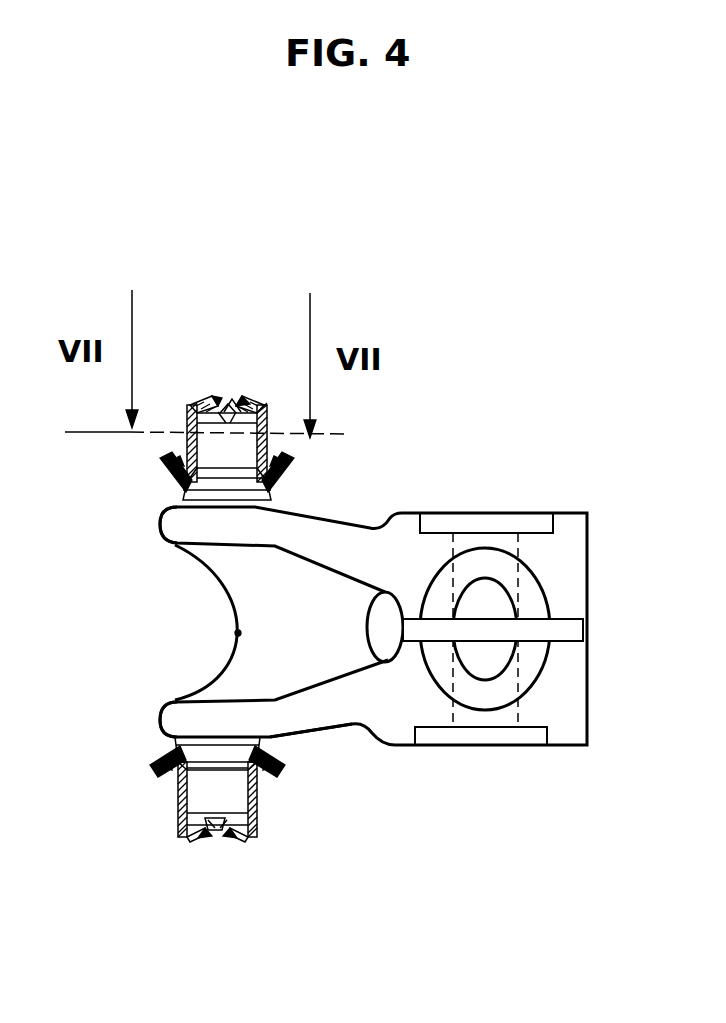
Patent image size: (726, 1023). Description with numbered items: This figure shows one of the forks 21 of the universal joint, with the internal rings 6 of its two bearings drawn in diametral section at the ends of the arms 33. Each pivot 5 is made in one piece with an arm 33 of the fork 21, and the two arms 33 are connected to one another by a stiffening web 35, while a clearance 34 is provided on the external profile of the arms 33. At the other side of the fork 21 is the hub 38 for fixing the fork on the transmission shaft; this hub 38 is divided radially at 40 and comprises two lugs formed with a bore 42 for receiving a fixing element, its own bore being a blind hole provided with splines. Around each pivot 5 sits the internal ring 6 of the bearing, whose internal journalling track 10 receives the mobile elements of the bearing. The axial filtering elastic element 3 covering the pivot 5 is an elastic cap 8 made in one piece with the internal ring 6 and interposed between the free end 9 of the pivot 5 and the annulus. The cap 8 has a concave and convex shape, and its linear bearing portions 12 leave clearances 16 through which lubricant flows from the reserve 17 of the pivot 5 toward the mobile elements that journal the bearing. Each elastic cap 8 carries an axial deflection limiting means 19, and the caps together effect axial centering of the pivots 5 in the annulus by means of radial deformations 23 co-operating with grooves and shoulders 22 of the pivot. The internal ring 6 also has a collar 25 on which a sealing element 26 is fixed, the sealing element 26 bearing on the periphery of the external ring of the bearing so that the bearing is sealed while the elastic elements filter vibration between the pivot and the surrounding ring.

The axial filtering elastic element 3 is at (262, 410).
The pivot 5 is at (190, 437).
The internal ring 6 is at (267, 447).
The elastic cap 8 is at (248, 404).
The free end 9 is at (221, 415).
The internal journalling track 10 is at (192, 452).
The linear bearing portions 12 is at (240, 402).
The clearances 16 is at (235, 406).
The reserve 17 is at (264, 412).
The axial deflection limiting means 19 is at (212, 834).
The fork 21 is at (365, 705).
The grooves and shoulders 22 is at (197, 440).
The radial deformations 23 is at (243, 478).
The collar 25 is at (182, 480).
The sealing element 26 is at (283, 470).
The arms 33 is at (182, 518).
The clearance 34 is at (381, 520).
The stiffening web 35 is at (237, 633).
The hub 38 is at (402, 710).
The radial division 40 is at (583, 632).
The bore 42 is at (505, 522).